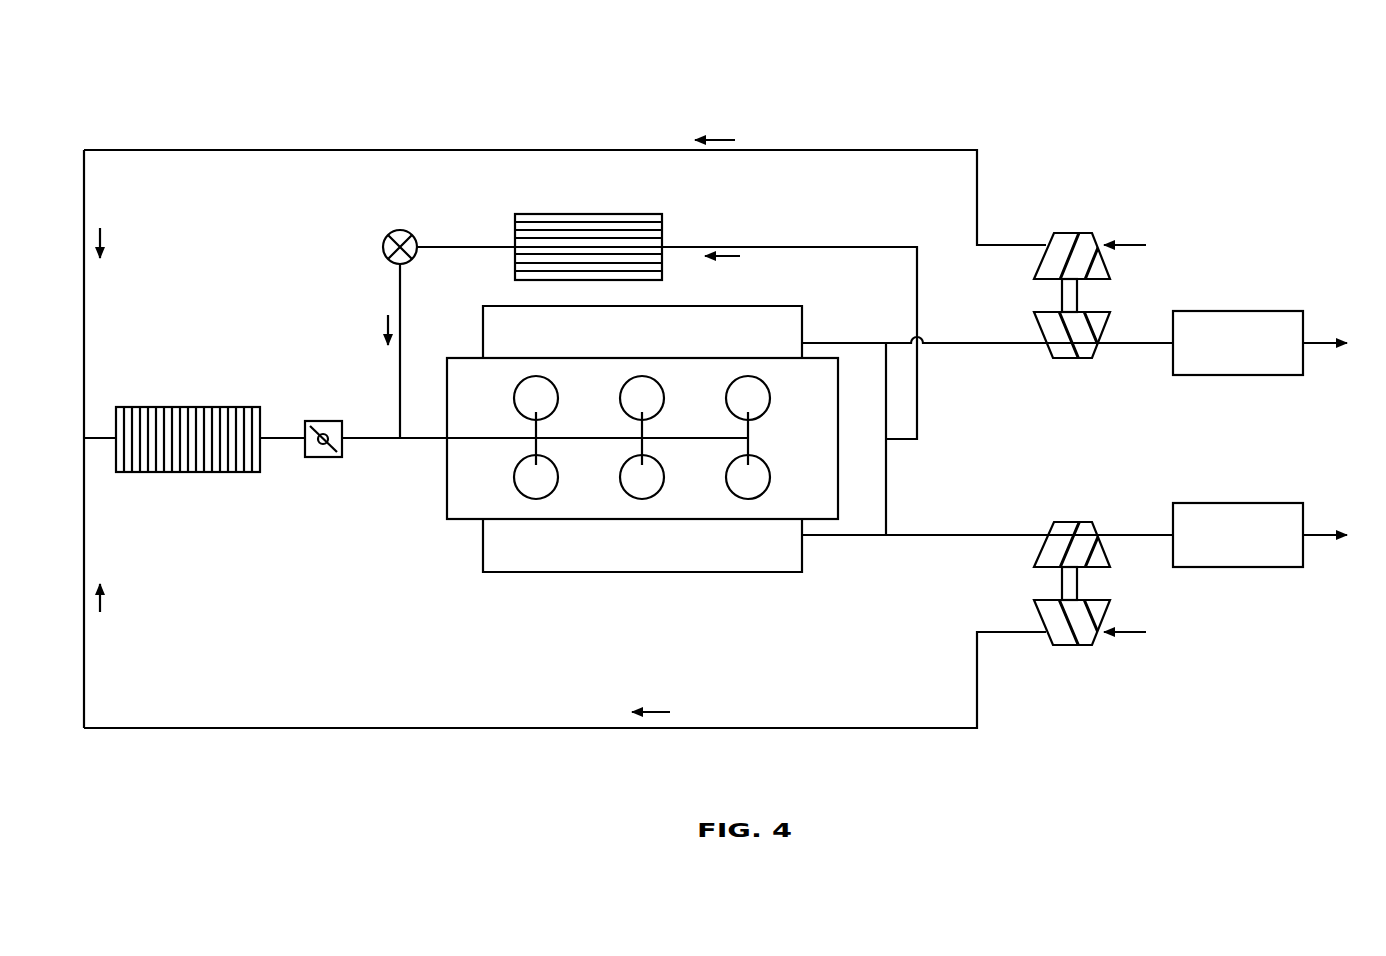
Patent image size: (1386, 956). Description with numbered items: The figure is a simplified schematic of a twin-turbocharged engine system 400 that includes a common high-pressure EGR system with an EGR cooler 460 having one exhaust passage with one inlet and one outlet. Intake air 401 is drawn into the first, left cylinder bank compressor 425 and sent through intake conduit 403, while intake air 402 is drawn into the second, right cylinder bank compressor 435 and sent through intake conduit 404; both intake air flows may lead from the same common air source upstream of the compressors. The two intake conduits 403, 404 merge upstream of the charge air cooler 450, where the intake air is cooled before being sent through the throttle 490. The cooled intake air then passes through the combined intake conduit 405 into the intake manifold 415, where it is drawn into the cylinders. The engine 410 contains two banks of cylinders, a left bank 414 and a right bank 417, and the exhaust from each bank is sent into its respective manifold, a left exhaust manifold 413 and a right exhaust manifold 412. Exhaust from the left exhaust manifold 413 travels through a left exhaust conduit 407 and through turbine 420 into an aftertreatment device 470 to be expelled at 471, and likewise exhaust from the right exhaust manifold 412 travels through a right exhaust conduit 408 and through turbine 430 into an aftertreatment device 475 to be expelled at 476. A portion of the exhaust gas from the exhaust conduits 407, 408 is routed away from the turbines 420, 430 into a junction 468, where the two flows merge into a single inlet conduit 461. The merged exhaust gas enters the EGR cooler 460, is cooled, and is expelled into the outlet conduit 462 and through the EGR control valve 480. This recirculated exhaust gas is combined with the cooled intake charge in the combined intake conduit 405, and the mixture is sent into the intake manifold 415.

The engine system 400 is at (212, 92).
The intake air 401 is at (1144, 245).
The intake air 402 is at (1144, 632).
The intake conduit 403 is at (452, 148).
The intake conduit 404 is at (400, 731).
The combined intake conduit 405 is at (362, 444).
The left exhaust conduit 407 is at (941, 340).
The right exhaust conduit 408 is at (941, 540).
The engine 410 is at (430, 562).
The right exhaust manifold 412 is at (648, 577).
The left exhaust manifold 413 is at (742, 304).
The left bank 414 is at (775, 398).
The intake manifold 415 is at (511, 444).
The right bank 417 is at (778, 484).
The turbine 420 is at (1067, 360).
The compressor 425 is at (1067, 232).
The turbine 430 is at (1070, 520).
The compressor 435 is at (1071, 650).
The charge air cooler 450 is at (167, 476).
The EGR cooler 460 is at (641, 213).
The inlet conduit 461 is at (826, 243).
The outlet conduit 462 is at (490, 252).
The junction 468 is at (891, 447).
The aftertreatment device 470 is at (1222, 310).
The exhaust outlet 471 is at (1343, 343).
The aftertreatment device 475 is at (1248, 570).
The exhaust outlet 476 is at (1343, 535).
The EGR control valve 480 is at (396, 228).
The throttle 490 is at (333, 418).